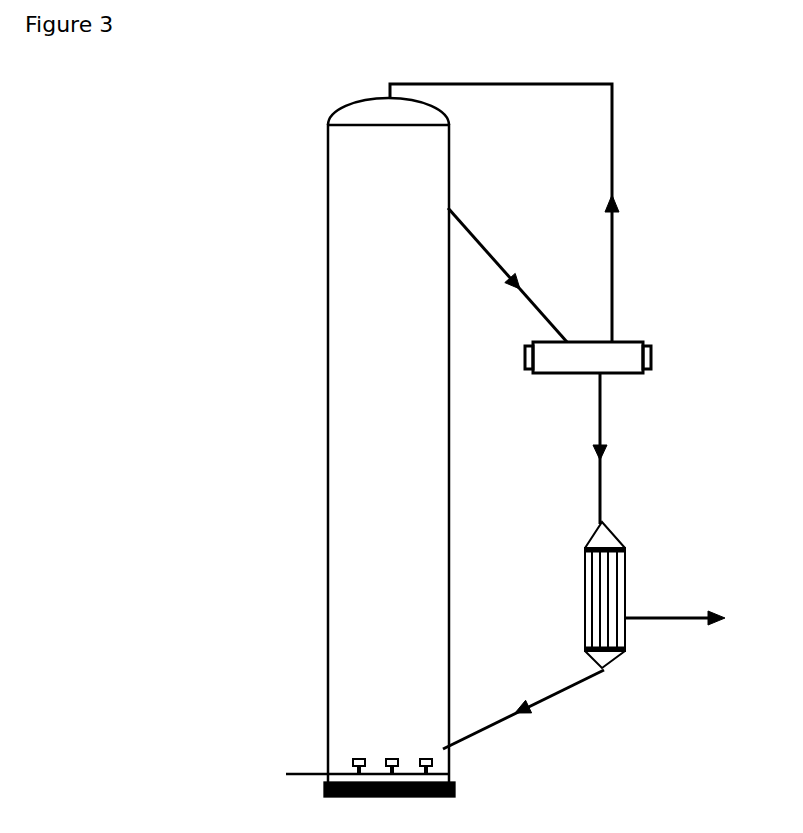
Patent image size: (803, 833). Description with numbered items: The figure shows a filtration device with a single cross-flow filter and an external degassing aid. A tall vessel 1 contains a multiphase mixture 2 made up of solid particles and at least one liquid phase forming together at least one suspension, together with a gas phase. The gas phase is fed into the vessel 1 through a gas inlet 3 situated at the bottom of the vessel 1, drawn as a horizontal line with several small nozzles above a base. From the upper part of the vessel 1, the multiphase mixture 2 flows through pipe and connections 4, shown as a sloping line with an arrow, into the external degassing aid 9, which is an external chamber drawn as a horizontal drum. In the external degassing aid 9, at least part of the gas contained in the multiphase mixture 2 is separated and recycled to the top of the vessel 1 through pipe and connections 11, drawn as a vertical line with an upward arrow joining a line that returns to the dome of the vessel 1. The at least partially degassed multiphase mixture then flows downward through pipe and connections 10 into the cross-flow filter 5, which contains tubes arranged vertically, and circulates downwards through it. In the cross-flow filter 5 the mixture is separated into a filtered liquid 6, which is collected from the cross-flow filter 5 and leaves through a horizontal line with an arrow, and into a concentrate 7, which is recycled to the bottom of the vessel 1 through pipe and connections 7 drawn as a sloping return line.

The vessel 1 is at (328, 230).
The multiphase mixture 2 is at (388, 453).
The gas inlet 3 is at (357, 777).
The pipe and connections 4 is at (483, 245).
The cross-flow filter 5 is at (623, 582).
The filtered liquid 6 is at (687, 619).
The concentrate and pipe and connections 7 is at (543, 703).
The external degassing aid 9 is at (628, 352).
The pipe and connections 10 is at (603, 433).
The pipe and connections 11 is at (612, 179).